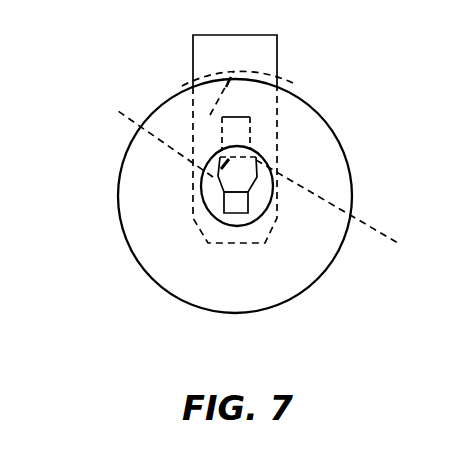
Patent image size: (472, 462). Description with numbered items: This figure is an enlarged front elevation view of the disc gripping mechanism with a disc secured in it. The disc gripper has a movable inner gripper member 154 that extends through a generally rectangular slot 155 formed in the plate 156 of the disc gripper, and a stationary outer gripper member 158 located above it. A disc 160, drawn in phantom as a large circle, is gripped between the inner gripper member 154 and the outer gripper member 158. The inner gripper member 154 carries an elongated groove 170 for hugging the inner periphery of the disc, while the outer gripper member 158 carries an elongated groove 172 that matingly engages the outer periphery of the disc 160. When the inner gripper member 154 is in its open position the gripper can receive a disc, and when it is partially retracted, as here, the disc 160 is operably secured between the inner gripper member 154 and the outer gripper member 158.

The movable inner gripper member 154 is at (232, 181).
The generally rectangular slot 155 is at (239, 204).
The plate 156 is at (398, 243).
The stationary outer gripper member 158 is at (263, 57).
The disc 160 is at (332, 152).
The elongated groove 170 is at (118, 111).
The elongated groove 172 is at (210, 115).